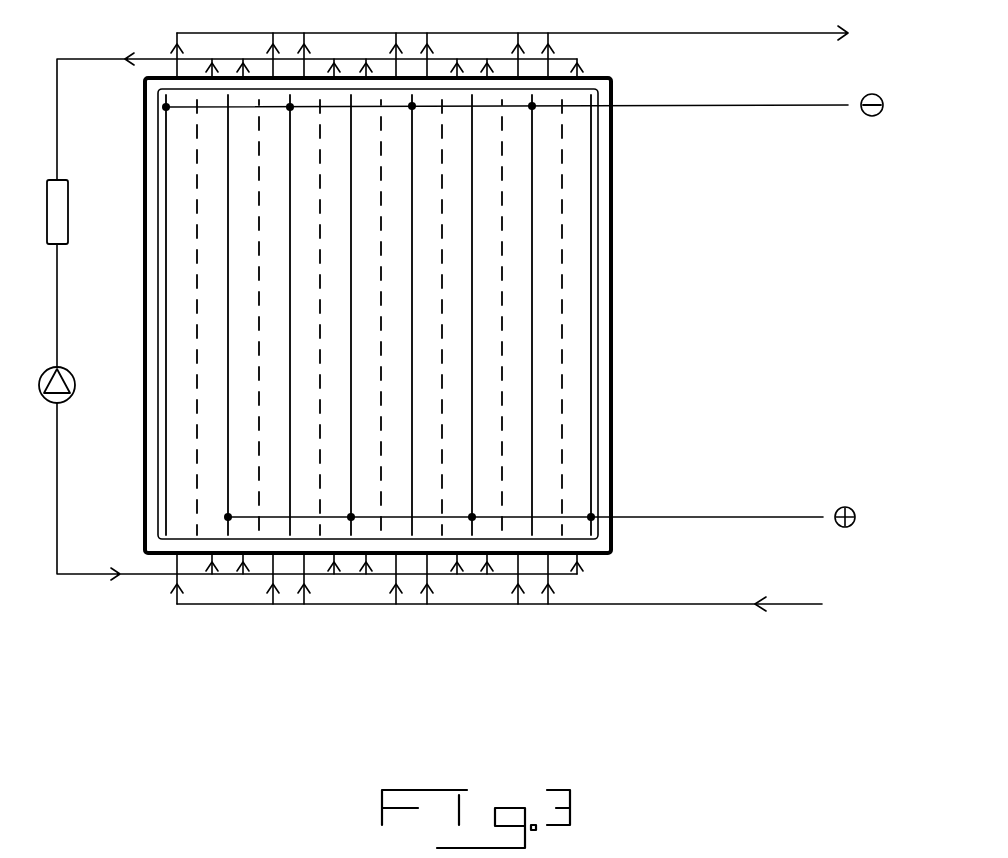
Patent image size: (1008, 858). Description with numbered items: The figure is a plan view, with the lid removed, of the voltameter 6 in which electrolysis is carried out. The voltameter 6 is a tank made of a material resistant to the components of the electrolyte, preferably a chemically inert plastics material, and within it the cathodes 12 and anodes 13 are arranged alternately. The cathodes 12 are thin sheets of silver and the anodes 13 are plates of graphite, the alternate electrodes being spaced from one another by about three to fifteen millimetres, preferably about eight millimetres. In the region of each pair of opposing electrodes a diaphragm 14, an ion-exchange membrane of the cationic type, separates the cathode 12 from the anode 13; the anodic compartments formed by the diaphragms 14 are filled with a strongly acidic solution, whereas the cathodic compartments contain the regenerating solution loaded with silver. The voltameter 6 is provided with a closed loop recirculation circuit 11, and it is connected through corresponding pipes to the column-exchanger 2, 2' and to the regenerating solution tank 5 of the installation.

The column-exchanger 2 is at (542, 601).
The column-exchanger 2' is at (760, 604).
The regenerating solution tank 5 is at (533, 30).
The voltameter 6 is at (477, 646).
The closed loop recirculation circuit 11 is at (88, 577).
The cathode 12 is at (536, 255).
The anode 13 is at (352, 353).
The diaphragm 14 is at (442, 473).